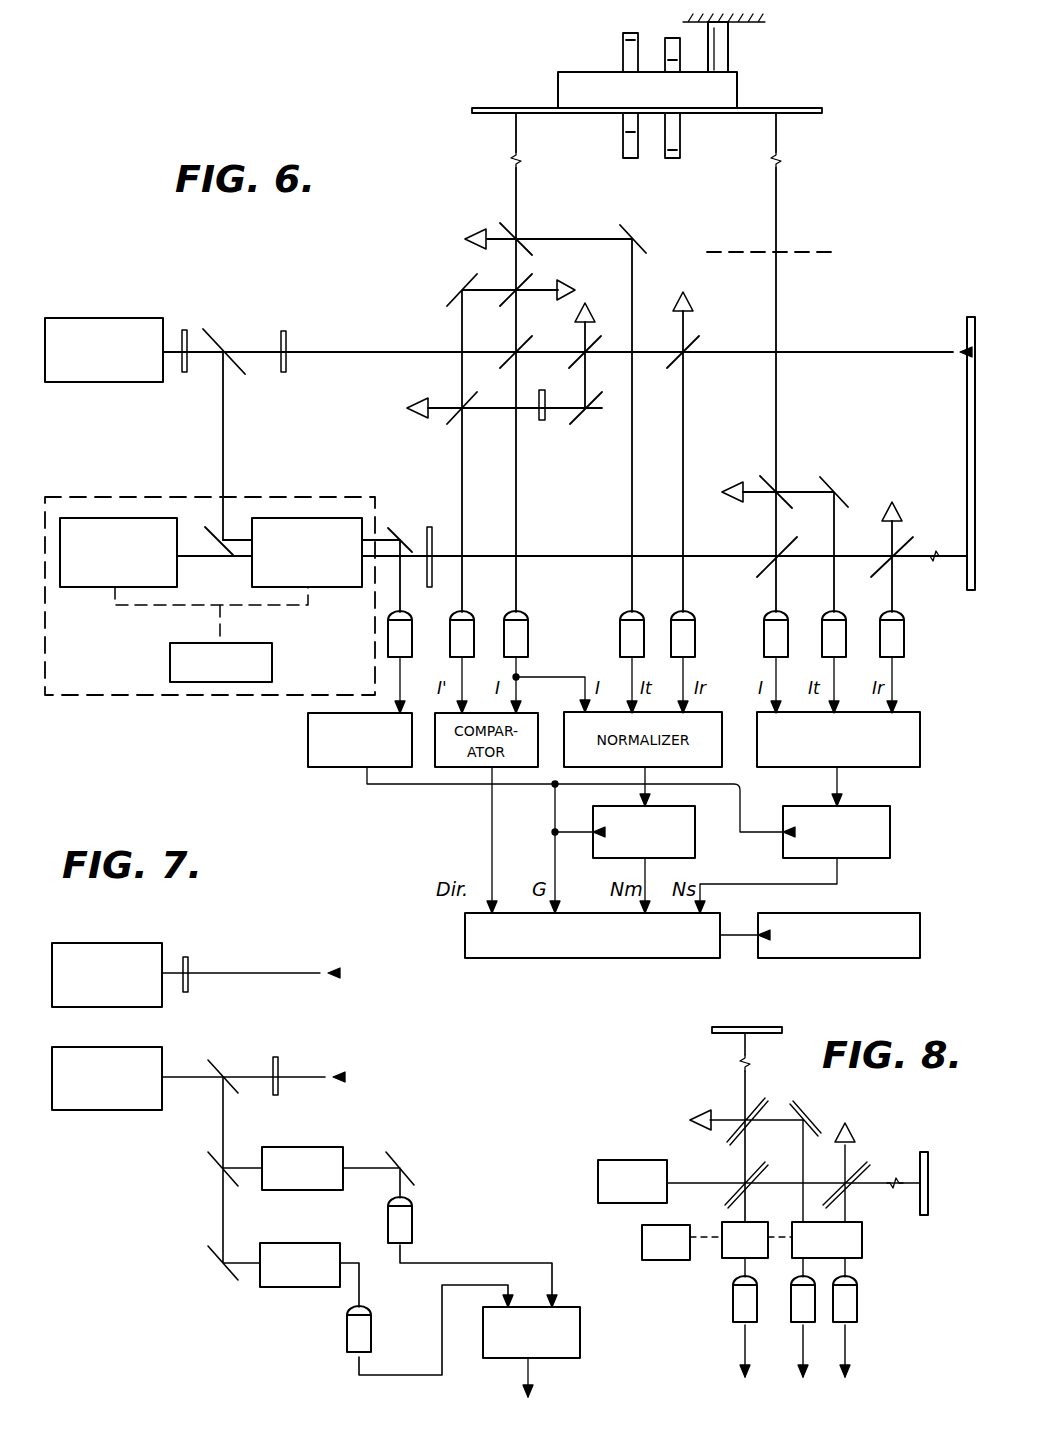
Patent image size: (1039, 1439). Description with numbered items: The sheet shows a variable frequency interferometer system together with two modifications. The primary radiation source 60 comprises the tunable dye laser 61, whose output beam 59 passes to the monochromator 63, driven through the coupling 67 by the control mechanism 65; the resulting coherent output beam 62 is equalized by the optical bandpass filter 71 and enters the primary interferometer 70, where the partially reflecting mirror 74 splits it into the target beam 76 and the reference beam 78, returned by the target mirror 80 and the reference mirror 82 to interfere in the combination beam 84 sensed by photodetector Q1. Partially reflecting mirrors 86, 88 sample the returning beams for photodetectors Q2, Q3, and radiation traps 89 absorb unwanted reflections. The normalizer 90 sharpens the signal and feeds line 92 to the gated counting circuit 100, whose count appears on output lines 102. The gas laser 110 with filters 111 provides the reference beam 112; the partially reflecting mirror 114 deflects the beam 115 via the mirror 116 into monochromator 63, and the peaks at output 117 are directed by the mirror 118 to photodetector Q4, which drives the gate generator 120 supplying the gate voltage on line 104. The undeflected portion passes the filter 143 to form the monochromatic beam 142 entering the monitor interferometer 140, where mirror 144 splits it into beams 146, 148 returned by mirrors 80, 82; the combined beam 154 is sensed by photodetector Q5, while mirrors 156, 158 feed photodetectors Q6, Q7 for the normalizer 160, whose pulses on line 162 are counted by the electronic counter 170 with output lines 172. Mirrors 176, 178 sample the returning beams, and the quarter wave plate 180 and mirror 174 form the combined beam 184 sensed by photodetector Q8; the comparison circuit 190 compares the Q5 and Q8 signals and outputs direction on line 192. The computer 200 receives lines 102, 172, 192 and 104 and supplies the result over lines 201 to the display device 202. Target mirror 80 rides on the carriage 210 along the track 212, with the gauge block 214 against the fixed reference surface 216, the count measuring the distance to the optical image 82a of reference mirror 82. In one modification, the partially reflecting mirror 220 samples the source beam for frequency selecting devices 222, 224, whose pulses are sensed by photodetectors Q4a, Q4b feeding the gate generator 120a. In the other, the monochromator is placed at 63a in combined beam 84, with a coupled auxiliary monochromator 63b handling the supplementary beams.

In FIG. 6, the carriage 210 is at (558, 86).
In FIG. 6, the track 212 is at (638, 140).
In FIG. 6, the gauge block 214 is at (728, 56).
In FIG. 6, the fixed reference surface 216 is at (765, 25).
In FIG. 6, the target mirror 80 is at (540, 114).
In FIG. 8, the target mirror 80 is at (738, 1027).
In FIG. 6, the target beam of monitor interferometer 146 is at (516, 182).
In FIG. 6, the target beam 76 is at (776, 388).
In FIG. 6, the monitor interferometer 140 is at (414, 270).
In FIG. 6, the partially reflecting mirror 156 is at (532, 246).
In FIG. 6, the optical image of reference mirror 82a is at (818, 252).
In FIG. 6, the partially reflecting mirror 176 is at (500, 296).
In FIG. 6, the partially reflecting mirror 178 is at (593, 327).
In FIG. 6, the partially reflecting mirror 144 is at (504, 362).
In FIG. 6, the partially reflecting mirror 174 is at (430, 426).
In FIG. 6, the quarter wave plate 180 is at (542, 420).
In FIG. 6, the partially reflecting mirror 158 is at (695, 322).
In FIG. 6, the reference beam of monitor interferometer 148 is at (712, 352).
In FIG. 6, the monochromatic beam 142 is at (268, 345).
In FIG. 7, the monochromatic beam 142 is at (238, 958).
In FIG. 6, the reference mirror 82 is at (964, 414).
In FIG. 8, the reference mirror 82 is at (920, 1156).
In FIG. 6, the multiple frequency gas laser 110 is at (156, 315).
In FIG. 7, the multiple frequency gas laser 110 is at (134, 943).
In FIG. 6, the reference beam 112 is at (176, 329).
In FIG. 6, the filters 111 is at (192, 328).
In FIG. 7, the filters 111 is at (188, 960).
In FIG. 6, the partially reflecting mirror 114 is at (210, 320).
In FIG. 6, the filter 143 is at (292, 334).
In FIG. 6, the deflected reference beam 115 is at (223, 424).
In FIG. 6, the primary radiation source 60 is at (110, 488).
In FIG. 7, the primary radiation source 60 is at (108, 1110).
In FIG. 6, the tunable dye laser 61 is at (140, 516).
In FIG. 8, the tunable dye laser 61 is at (642, 1168).
In FIG. 6, the mirror 116 is at (211, 522).
In FIG. 6, the monochromator 63 is at (310, 518).
In FIG. 6, the output beam 59 is at (198, 566).
In FIG. 6, the coupling 67 is at (290, 610).
In FIG. 6, the control mechanism 65 is at (170, 668).
In FIG. 8, the control mechanism 65 is at (642, 1236).
In FIG. 6, the output beam 62 is at (726, 554).
In FIG. 7, the output beam 62 is at (288, 1070).
In FIG. 8, the output beam 62 is at (714, 1182).
In FIG. 6, the monochromator output 117 is at (396, 526).
In FIG. 6, the combined beam 184 is at (462, 460).
In FIG. 6, the mirror 118 is at (390, 528).
In FIG. 6, the optical bandpass filter 71 is at (438, 530).
In FIG. 7, the optical bandpass filter 71 is at (278, 1094).
In FIG. 6, the combined beam 154 is at (516, 504).
In FIG. 6, the partially reflecting mirror 86 is at (760, 476).
In FIG. 8, the partially reflecting mirror 86 is at (740, 1098).
In FIG. 6, the radiation traps 89 is at (736, 490).
In FIG. 6, the partially reflecting mirror 88 is at (908, 540).
In FIG. 8, the partially reflecting mirror 88 is at (864, 1168).
In FIG. 6, the combination beam 84 is at (778, 594).
In FIG. 8, the combination beam 84 is at (750, 1198).
In FIG. 6, the partially reflecting mirror 74 is at (756, 570).
In FIG. 6, the reference beam 78 is at (930, 568).
In FIG. 6, the primary interferometer 70 is at (928, 624).
In FIG. 6, the photodetector Q4 is at (413, 656).
In FIG. 6, the photodetector Q8 is at (475, 653).
In FIG. 6, the photodetector Q5 is at (530, 655).
In FIG. 6, the photodetector Q6 is at (644, 652).
In FIG. 6, the photodetector Q7 is at (697, 652).
In FIG. 6, the photodetector Q1 is at (789, 651).
In FIG. 8, the photodetector Q1 is at (727, 1317).
In FIG. 6, the photodetector Q2 is at (845, 651).
In FIG. 8, the photodetector Q2 is at (790, 1317).
In FIG. 6, the photodetector Q3 is at (905, 653).
In FIG. 8, the photodetector Q3 is at (862, 1317).
In FIG. 6, the normalizer 160 is at (724, 698).
In FIG. 6, the gate generator 120 is at (308, 734).
In FIG. 6, the comparison circuit 190 is at (556, 696).
In FIG. 6, the normalizer 90 is at (912, 738).
In FIG. 6, the line 192 is at (492, 822).
In FIG. 6, the line 162 is at (620, 806).
In FIG. 6, the line 104 is at (682, 792).
In FIG. 7, the line 104 is at (528, 1382).
In FIG. 6, the electronic counter 170 is at (695, 832).
In FIG. 6, the line 92 is at (837, 786).
In FIG. 6, the gated counting circuit 100 is at (890, 824).
In FIG. 6, the lines 172 is at (658, 870).
In FIG. 6, the output lines 102 is at (837, 880).
In FIG. 6, the computer 200 is at (465, 928).
In FIG. 6, the lines 201 is at (740, 934).
In FIG. 6, the display device 202 is at (898, 913).
In FIG. 7, the partially reflecting mirror 220 is at (222, 1058).
In FIG. 7, the frequency selecting device 222 is at (322, 1147).
In FIG. 7, the frequency selecting device 224 is at (286, 1290).
In FIG. 7, the photodetector Q4a is at (450, 1229).
In FIG. 7, the photodetector Q4b is at (426, 1319).
In FIG. 7, the gate generator 120a is at (580, 1336).
In FIG. 8, the monochromator position in combined beam 63a is at (722, 1230).
In FIG. 8, the auxiliary monochromator 63b is at (862, 1230).